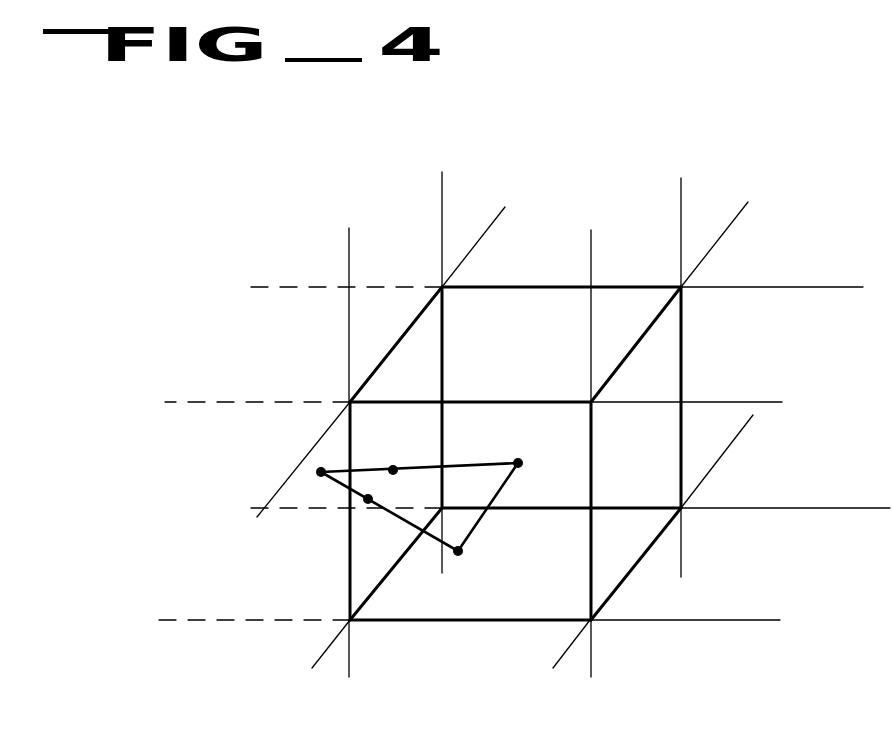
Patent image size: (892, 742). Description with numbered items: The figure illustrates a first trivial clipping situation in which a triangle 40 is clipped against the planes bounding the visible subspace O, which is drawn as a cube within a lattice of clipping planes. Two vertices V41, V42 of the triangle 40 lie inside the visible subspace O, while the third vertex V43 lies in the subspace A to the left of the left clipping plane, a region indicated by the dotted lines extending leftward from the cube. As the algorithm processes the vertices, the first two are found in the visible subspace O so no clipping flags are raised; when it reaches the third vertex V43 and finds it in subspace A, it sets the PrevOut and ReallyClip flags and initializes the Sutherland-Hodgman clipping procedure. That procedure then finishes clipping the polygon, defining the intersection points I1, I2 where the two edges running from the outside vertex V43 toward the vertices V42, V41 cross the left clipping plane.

The triangle 40 is at (460, 462).
The visible subspace O is at (657, 370).
The subspace to the left of the visible subspace A is at (239, 575).
The first vertex V41 is at (481, 565).
The second vertex V42 is at (541, 475).
The third vertex V43 is at (308, 488).
The intersection point I1 is at (384, 453).
The intersection point I2 is at (367, 519).